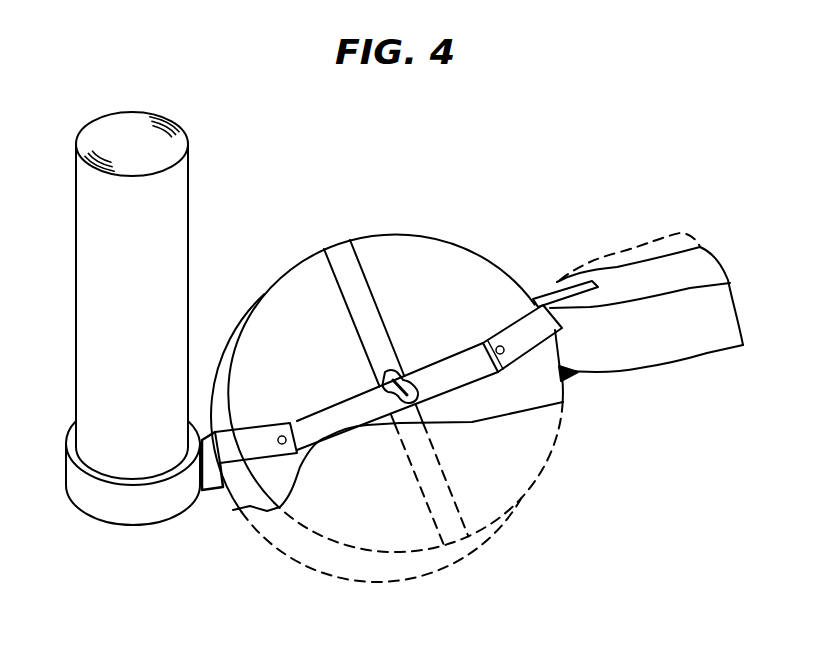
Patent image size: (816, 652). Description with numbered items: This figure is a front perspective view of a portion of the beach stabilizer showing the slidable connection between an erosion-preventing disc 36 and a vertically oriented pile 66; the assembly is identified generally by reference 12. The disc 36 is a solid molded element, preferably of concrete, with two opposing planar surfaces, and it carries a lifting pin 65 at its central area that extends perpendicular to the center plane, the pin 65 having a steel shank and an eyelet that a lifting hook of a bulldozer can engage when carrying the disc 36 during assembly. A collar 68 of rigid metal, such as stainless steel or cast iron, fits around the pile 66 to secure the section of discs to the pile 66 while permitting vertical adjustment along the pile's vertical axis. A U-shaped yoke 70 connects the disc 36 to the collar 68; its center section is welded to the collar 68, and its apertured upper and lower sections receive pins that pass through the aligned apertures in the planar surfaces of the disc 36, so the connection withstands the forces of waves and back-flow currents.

The apparatus 12 is at (561, 131).
The disc 36 is at (421, 236).
The lifting pin 65 is at (403, 375).
The pile 66 is at (93, 240).
The collar 68 is at (167, 503).
The yoke 70 is at (258, 403).